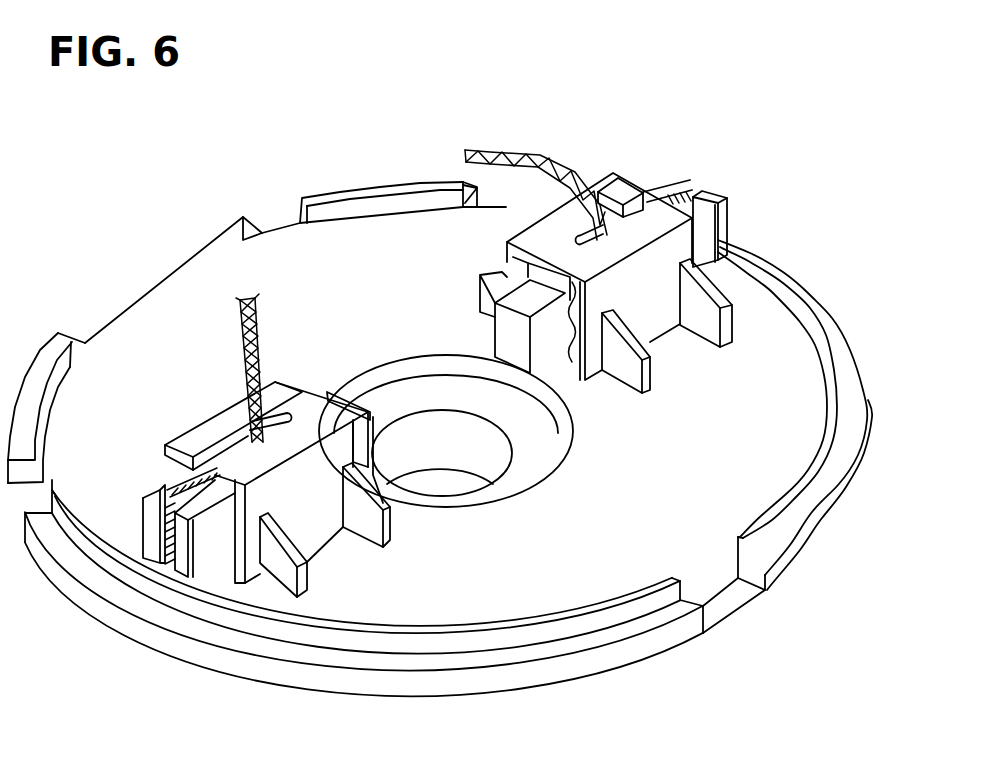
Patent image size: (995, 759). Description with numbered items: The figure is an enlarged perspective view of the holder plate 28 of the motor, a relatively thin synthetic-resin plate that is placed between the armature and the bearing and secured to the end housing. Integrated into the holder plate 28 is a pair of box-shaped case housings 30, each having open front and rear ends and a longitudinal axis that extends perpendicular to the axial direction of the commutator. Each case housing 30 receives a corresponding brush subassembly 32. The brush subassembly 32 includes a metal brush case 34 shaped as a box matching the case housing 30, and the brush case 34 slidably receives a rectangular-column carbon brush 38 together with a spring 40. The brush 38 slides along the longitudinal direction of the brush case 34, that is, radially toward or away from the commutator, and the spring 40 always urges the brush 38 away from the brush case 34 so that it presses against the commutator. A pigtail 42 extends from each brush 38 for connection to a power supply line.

The holder plate 28 is at (293, 180).
The case housing 30 is at (200, 433).
The brush subassembly 32 is at (143, 512).
The brush case 34 is at (157, 490).
The brush 38 is at (360, 397).
The spring 40 is at (173, 480).
The pigtail 42 is at (263, 333).